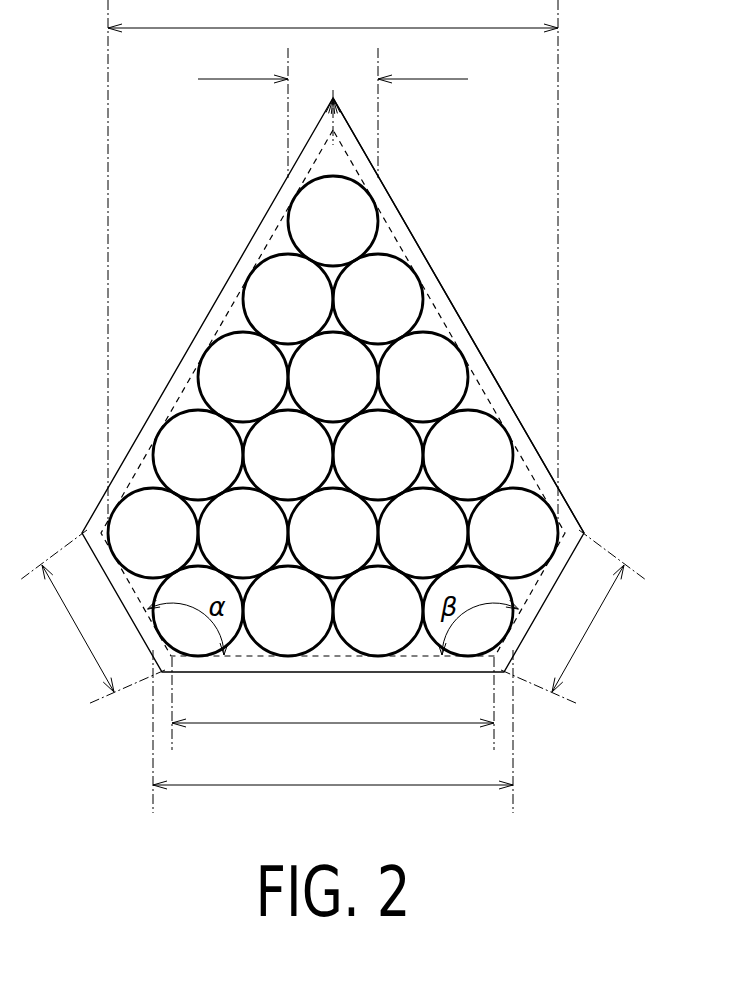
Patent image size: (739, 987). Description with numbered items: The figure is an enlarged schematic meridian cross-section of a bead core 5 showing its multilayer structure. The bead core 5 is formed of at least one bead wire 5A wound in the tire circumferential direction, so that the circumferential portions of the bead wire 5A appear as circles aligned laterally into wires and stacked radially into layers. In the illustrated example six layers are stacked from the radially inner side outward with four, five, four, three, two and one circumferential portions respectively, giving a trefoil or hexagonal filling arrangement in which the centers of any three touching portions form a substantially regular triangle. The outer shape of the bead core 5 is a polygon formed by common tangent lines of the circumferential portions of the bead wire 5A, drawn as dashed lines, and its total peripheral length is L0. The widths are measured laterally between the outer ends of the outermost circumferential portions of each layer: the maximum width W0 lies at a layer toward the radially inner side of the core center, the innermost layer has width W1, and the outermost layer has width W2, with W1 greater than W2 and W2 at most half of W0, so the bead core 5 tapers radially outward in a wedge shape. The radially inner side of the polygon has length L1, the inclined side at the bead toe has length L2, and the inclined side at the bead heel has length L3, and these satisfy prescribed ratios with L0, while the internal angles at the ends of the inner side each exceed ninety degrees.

The bead core 5 is at (413, 210).
The bead wire 5A is at (468, 455).
The peripheral length of the outer shape L0 is at (441, 283).
The maximum width of the bead core W0 is at (333, 270).
The width of the innermost layer W1 is at (333, 731).
The width of the outermost layer W2 is at (333, 113).
The length of the radially inner side L1 is at (333, 703).
The length of the bead toe side L2 is at (92, 617).
The length of the bead heel side L3 is at (573, 617).